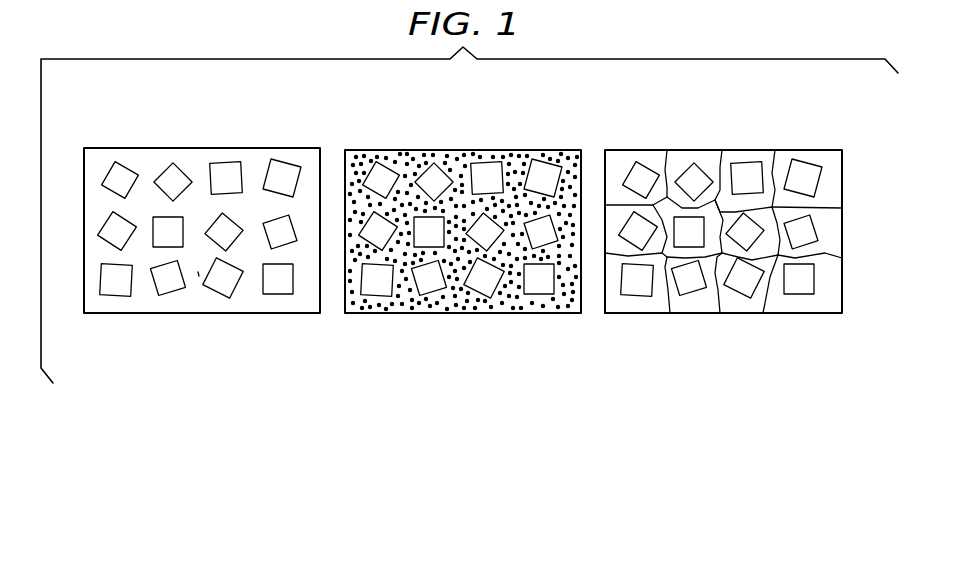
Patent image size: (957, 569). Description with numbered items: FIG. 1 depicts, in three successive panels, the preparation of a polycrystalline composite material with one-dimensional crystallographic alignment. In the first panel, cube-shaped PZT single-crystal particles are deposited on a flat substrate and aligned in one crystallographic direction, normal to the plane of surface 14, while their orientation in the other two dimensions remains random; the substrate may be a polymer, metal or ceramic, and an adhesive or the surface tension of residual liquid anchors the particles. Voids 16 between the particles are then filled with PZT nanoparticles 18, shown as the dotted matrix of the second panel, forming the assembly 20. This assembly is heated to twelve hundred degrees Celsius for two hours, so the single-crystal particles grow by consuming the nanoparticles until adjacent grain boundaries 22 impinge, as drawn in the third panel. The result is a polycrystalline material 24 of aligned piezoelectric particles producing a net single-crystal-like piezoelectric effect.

The surface 14 is at (253, 158).
The voids 16 is at (250, 285).
The nanoparticles 18 is at (515, 172).
The assembly 20 is at (549, 150).
The grain boundaries 22 is at (672, 157).
The polycrystalline material 24 is at (817, 150).